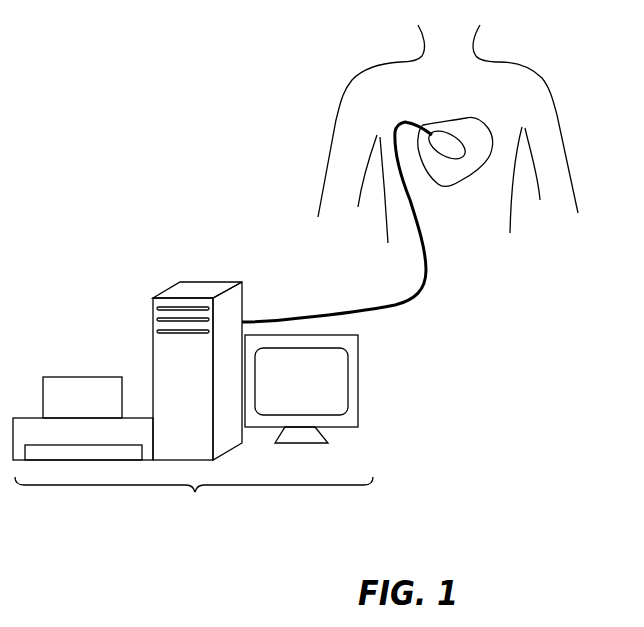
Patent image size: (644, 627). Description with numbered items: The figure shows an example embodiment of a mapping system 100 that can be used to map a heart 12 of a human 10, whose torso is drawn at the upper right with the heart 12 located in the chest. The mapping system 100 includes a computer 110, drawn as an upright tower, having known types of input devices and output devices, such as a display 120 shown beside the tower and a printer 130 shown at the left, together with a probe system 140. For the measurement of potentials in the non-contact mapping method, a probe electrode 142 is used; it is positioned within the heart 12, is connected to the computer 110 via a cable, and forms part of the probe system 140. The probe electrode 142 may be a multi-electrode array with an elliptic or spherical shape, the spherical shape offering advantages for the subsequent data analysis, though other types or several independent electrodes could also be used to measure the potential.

The human 10 is at (460, 60).
The heart 12 is at (480, 127).
The mapping system 100 is at (194, 510).
The computer 110 is at (200, 453).
The display 120 is at (318, 395).
The printer 130 is at (100, 413).
The probe system 140 is at (450, 293).
The probe electrode 142 is at (460, 153).